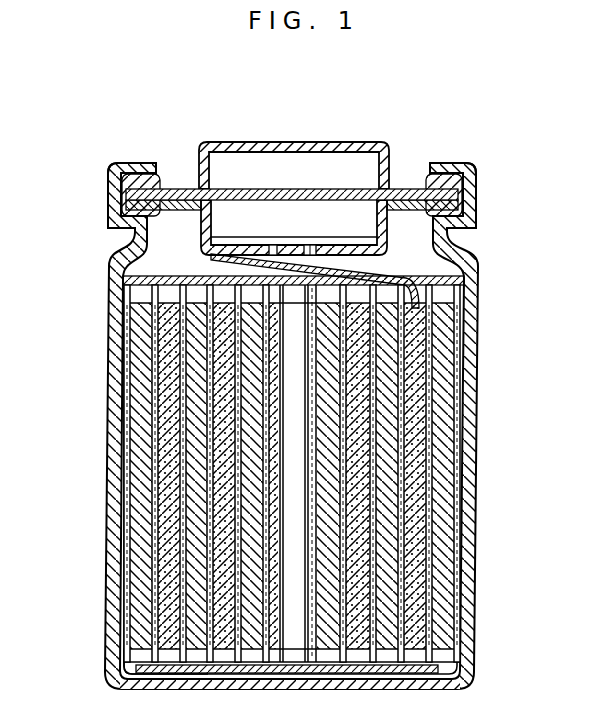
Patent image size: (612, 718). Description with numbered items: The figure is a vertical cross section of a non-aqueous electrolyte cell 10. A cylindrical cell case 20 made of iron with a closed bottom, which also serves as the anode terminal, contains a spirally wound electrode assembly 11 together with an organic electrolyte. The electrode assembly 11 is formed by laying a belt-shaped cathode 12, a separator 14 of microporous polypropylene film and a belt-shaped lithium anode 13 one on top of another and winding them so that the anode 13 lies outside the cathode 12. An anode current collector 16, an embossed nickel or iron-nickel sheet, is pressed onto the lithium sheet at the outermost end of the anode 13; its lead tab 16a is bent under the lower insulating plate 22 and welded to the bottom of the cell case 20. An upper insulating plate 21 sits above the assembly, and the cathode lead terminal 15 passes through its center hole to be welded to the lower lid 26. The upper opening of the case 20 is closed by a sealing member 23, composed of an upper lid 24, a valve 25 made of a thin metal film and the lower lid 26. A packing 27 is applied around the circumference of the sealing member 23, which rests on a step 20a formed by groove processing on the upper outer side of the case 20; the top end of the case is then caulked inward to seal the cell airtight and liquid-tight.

The non-aqueous electrolyte cell 10 is at (451, 120).
The electrode assembly 11 is at (355, 469).
The cathode 12 is at (432, 340).
The anode 13 is at (527, 285).
The separator 14 is at (468, 455).
The cathode lead terminal 15 is at (432, 246).
The anode current collector 16 is at (116, 562).
The lead tab 16a is at (168, 672).
The cell case 20 is at (470, 600).
The step 20a is at (123, 229).
The insulating plate 21 is at (110, 282).
The insulating plate 22 is at (392, 667).
The sealing member 23 is at (292, 147).
The upper lid 24 is at (228, 136).
The valve 25 is at (370, 97).
The lower lid 26 is at (323, 205).
The packing 27 is at (462, 173).